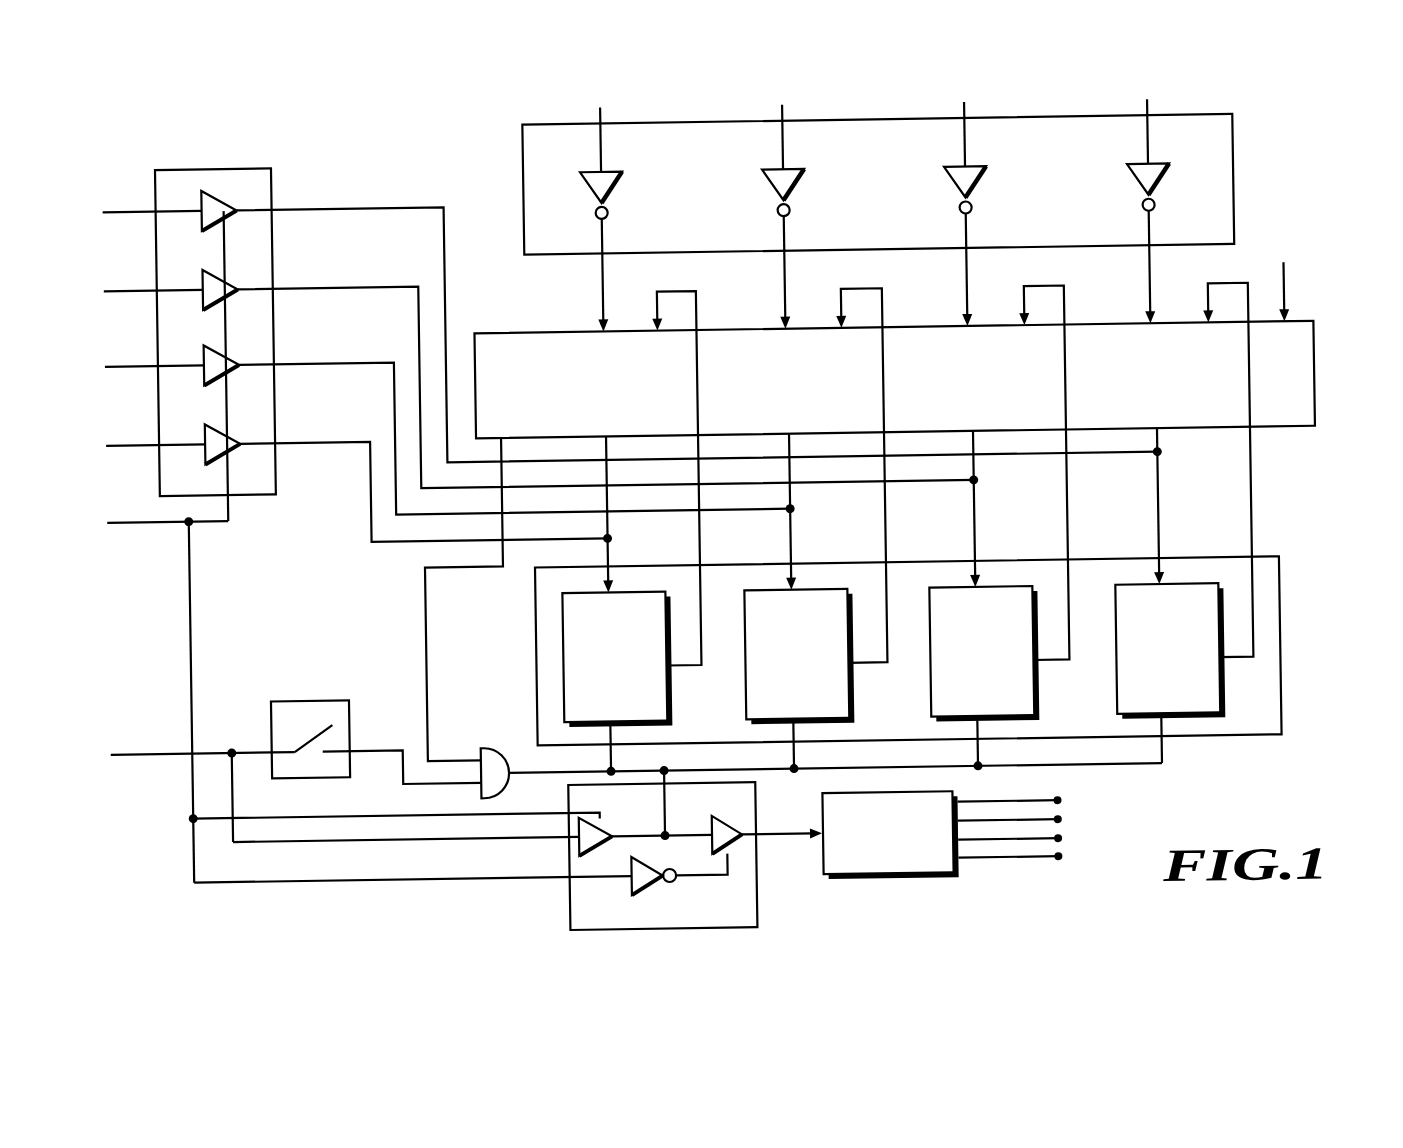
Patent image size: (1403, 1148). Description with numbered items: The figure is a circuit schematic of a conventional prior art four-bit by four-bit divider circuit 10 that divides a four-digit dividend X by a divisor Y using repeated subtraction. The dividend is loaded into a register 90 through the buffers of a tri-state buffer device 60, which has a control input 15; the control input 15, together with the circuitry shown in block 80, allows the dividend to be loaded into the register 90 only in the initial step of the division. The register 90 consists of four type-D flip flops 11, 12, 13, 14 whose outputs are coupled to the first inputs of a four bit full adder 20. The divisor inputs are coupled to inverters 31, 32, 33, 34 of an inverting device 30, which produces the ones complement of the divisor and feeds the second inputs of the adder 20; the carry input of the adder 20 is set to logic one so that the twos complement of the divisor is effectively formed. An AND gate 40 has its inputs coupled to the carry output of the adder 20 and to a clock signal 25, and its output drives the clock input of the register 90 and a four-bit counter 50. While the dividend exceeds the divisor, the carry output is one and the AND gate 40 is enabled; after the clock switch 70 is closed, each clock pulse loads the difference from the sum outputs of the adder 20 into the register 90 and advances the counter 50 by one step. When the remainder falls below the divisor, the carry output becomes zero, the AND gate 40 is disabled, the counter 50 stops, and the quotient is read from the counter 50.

The counting circuit 10 is at (1256, 808).
The type-D flip flop 11 is at (1217, 693).
The type-D flip flop 12 is at (1032, 693).
The type-D flip flop 13 is at (850, 695).
The type-D flip flop 14 is at (665, 692).
The control input 15 is at (350, 692).
The four bit full adder 20 is at (1271, 436).
The clock signal 25 is at (325, 790).
The inverting device 30 is at (527, 182).
The inverter 31 is at (1161, 196).
The inverter 32 is at (978, 196).
The inverter 33 is at (796, 196).
The inverter 34 is at (614, 196).
The AND gate 40 is at (486, 744).
The 4-bit counter 50 is at (911, 878).
The tri-state buffer device 60 is at (221, 160).
The clock switch 70 is at (327, 694).
The block 80 is at (752, 881).
The register 90 is at (1278, 627).